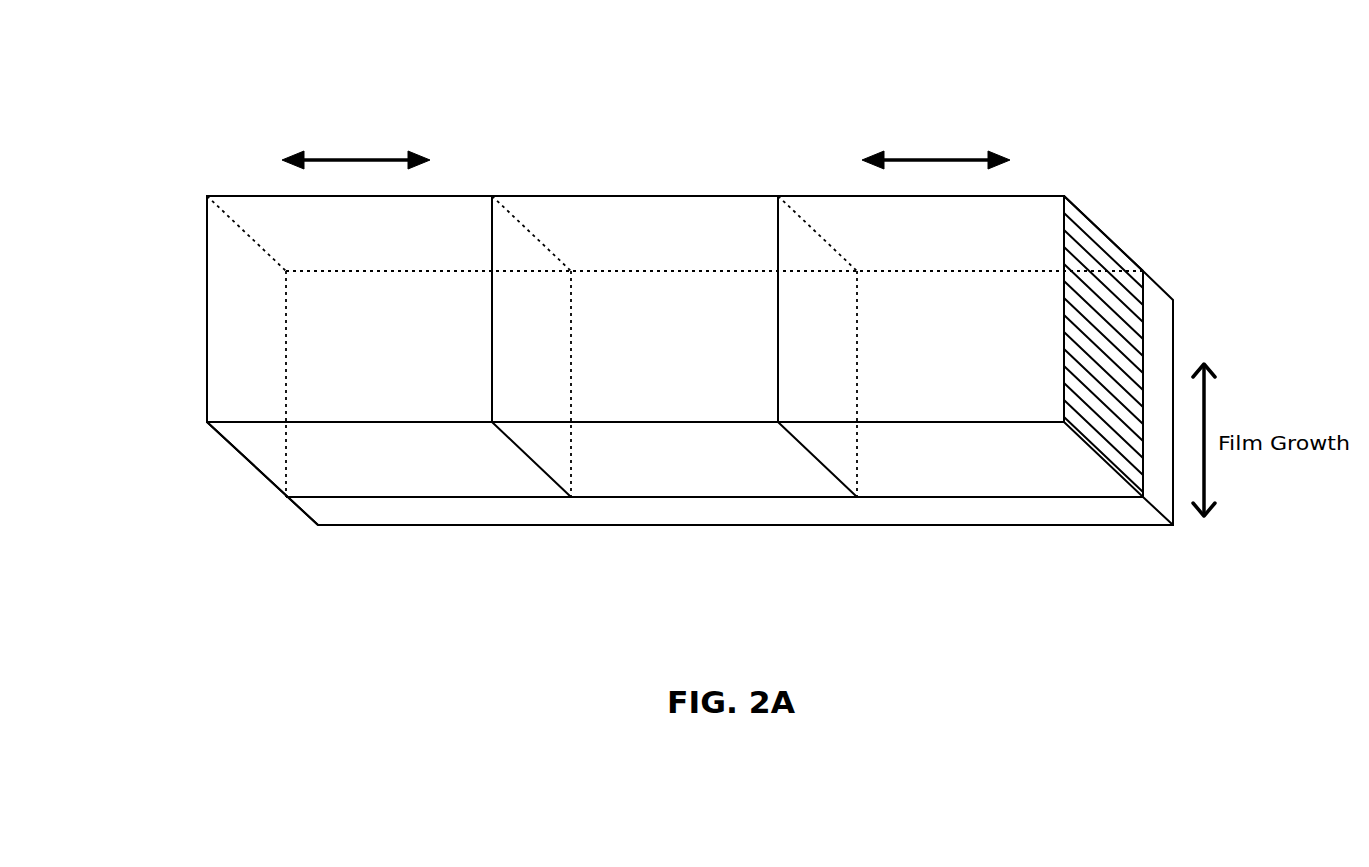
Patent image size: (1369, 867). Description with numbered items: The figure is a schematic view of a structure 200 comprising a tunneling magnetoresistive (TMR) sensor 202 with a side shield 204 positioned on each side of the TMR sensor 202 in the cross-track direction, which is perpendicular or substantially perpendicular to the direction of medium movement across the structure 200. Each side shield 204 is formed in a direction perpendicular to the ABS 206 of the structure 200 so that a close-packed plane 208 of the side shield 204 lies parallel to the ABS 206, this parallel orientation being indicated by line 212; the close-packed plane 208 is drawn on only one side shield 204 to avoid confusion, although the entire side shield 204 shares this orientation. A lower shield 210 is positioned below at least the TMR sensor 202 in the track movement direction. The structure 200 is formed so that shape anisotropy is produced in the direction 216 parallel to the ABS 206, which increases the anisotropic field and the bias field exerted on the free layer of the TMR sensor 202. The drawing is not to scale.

The structure 200 is at (686, 121).
The tunneling magnetoresistive (TMR) sensor 202 is at (657, 374).
The side shield 204 is at (375, 374).
The ABS 206 is at (680, 459).
The close-packed plane 208 is at (1125, 303).
The lower shield 210 is at (840, 510).
The line 212 is at (1113, 242).
The direction 216 is at (646, 136).